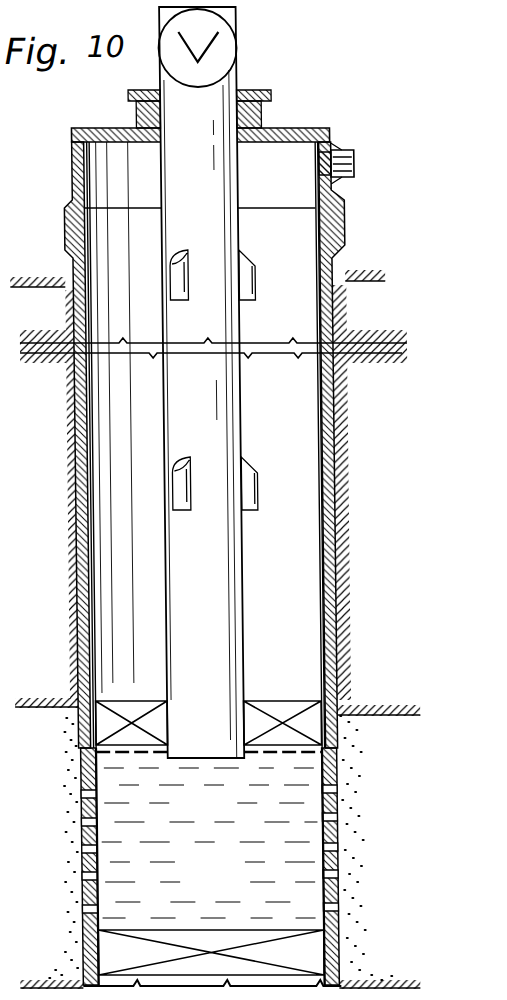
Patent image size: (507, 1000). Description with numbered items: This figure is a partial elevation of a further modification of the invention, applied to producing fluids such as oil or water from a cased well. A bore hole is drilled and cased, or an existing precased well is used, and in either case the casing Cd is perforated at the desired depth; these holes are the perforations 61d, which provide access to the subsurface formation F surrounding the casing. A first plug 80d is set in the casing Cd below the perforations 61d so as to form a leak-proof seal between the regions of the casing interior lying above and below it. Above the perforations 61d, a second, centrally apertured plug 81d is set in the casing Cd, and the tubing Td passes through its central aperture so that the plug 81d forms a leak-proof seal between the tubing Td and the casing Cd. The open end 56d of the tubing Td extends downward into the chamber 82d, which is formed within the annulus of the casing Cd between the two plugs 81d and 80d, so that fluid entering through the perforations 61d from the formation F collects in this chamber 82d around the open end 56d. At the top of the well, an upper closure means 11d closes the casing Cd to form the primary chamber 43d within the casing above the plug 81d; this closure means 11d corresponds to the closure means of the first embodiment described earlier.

The upper closure means 11d is at (296, 106).
The casing Cd is at (331, 432).
The primary chamber 43d is at (286, 514).
The tubing Td is at (223, 577).
The second, centrally apertured plug 81d is at (275, 703).
The subsurface formation F is at (216, 629).
The open end of the tubing 56d is at (203, 760).
The chamber 82d is at (221, 881).
The perforations 61d is at (330, 903).
The first plug 80d is at (302, 950).